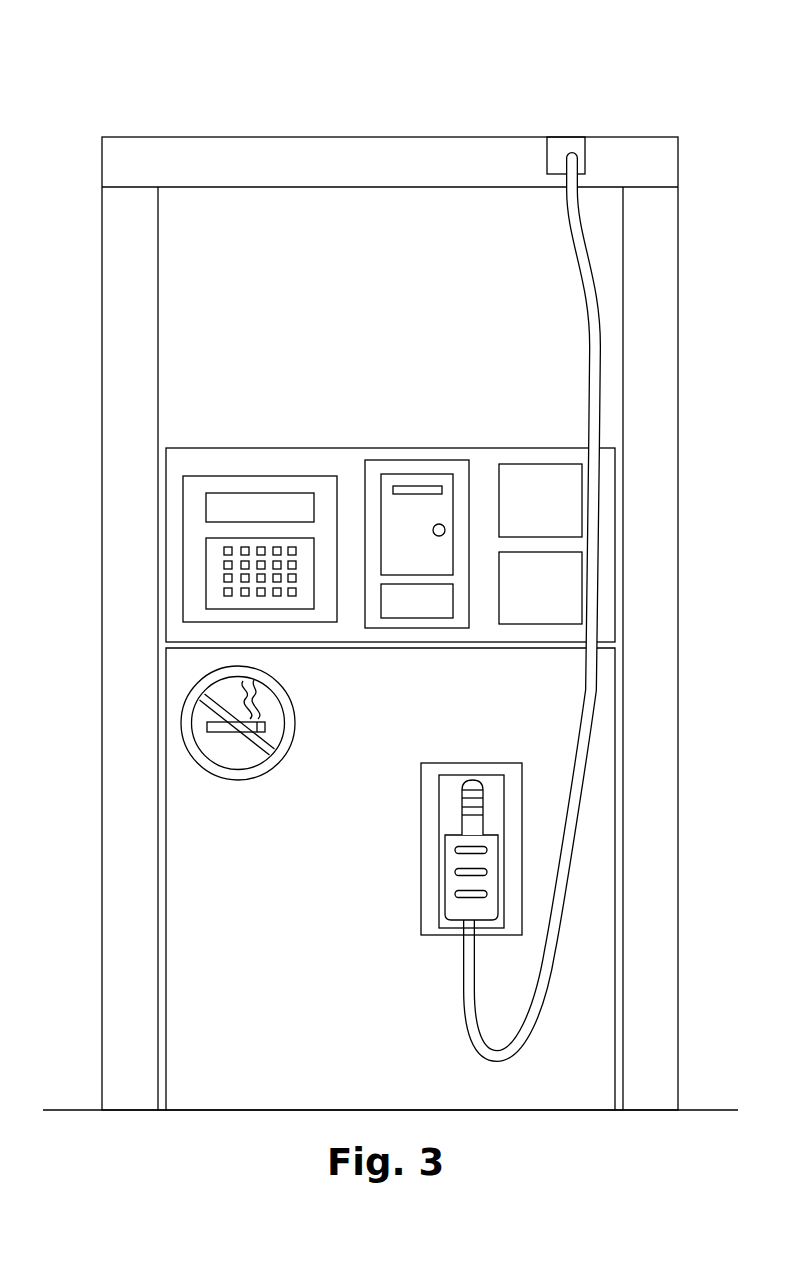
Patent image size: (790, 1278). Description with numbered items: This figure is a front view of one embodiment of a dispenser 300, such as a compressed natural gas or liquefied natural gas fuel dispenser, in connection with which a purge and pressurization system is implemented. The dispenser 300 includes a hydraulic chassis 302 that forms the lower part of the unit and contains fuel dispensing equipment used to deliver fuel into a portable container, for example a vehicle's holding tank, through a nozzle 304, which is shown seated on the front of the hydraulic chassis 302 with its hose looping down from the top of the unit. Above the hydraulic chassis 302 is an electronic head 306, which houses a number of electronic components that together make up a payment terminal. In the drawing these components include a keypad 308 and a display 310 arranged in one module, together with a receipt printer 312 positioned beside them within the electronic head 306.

The dispenser 300 is at (508, 84).
The hydraulic chassis 302 is at (210, 852).
The nozzle 304 is at (481, 830).
The electronic head 306 is at (207, 448).
The keypad 308 is at (215, 570).
The display 310 is at (256, 506).
The receipt printer 312 is at (407, 480).